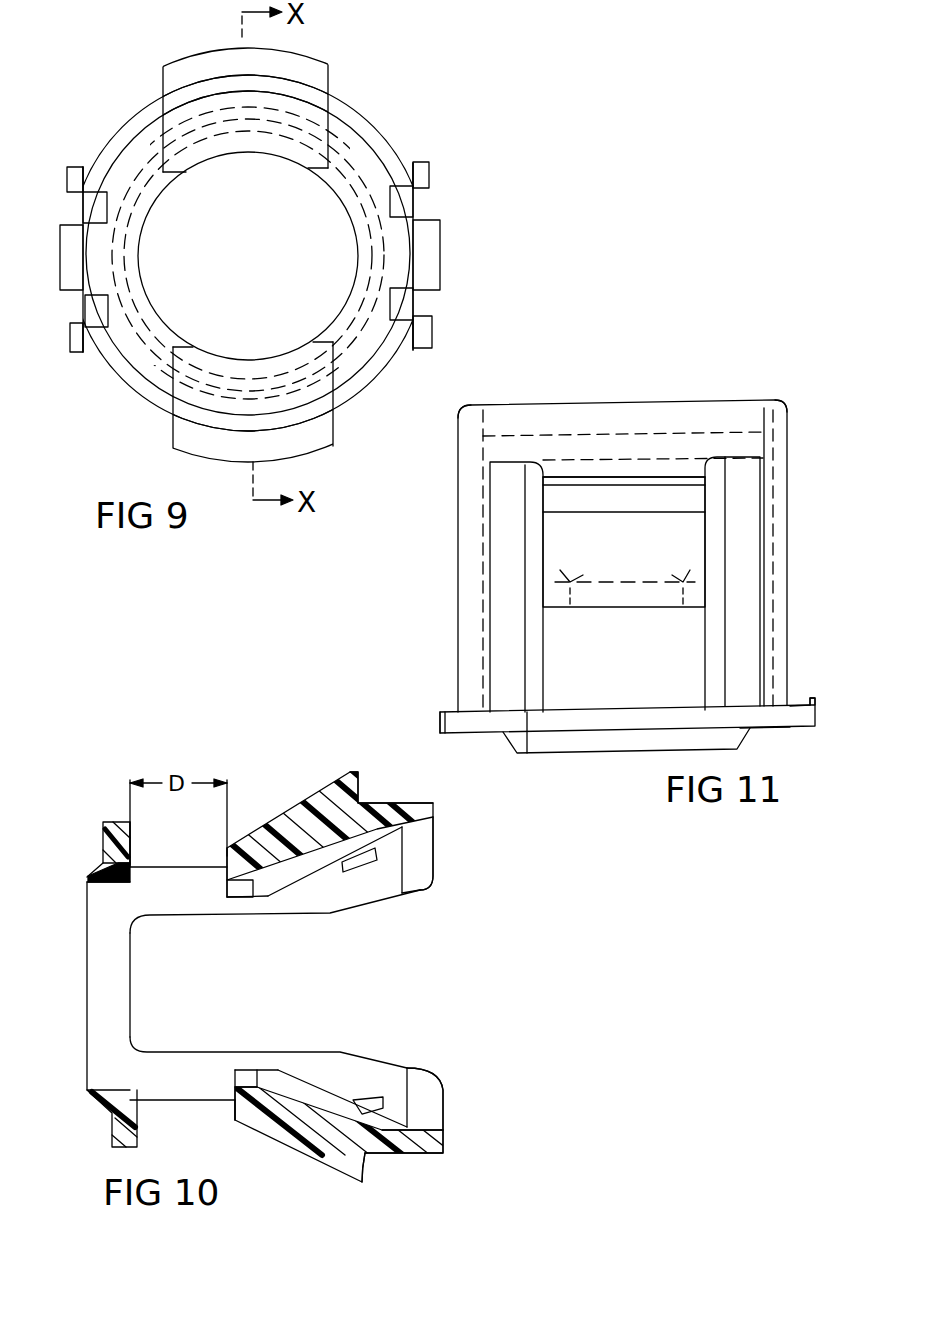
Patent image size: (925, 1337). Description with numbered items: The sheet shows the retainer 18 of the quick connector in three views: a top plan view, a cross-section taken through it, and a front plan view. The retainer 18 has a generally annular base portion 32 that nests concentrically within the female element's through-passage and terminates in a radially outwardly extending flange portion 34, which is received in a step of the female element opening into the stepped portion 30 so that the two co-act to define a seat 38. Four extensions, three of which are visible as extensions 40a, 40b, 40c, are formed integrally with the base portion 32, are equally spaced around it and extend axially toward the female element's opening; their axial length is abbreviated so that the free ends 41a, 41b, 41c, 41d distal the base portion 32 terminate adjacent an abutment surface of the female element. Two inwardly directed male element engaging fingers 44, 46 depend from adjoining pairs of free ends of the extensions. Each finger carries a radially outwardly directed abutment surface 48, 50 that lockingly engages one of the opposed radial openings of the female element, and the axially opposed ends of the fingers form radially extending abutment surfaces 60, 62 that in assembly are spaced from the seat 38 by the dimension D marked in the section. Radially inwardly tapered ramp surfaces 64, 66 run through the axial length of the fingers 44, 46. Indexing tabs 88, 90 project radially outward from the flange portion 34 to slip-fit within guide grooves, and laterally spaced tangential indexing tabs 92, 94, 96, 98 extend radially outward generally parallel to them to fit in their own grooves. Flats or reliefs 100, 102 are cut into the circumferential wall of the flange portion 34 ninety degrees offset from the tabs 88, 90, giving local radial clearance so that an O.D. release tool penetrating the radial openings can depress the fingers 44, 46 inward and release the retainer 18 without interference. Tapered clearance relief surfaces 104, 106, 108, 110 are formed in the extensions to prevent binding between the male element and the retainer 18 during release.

In FIG. 9, the retainer 18 is at (114, 100).
In FIG. 11, the retainer 18 is at (786, 380).
In FIG. 10, the retainer 18 is at (100, 795).
In FIG. 11, the stepped portion 30 is at (457, 705).
In FIG. 11, the base portion 32 is at (765, 725).
In FIG. 10, the base portion 32 is at (103, 903).
In FIG. 10, the flange portion 34 is at (112, 854).
In FIG. 10, the seat 38 is at (137, 1113).
In FIG. 10, the extension 40a is at (327, 903).
In FIG. 11, the extension 40b is at (775, 603).
In FIG. 10, the extension 40b is at (303, 1057).
In FIG. 11, the extension 40c is at (480, 565).
In FIG. 9, the free end 41a is at (420, 165).
In FIG. 10, the free end 41a is at (423, 877).
In FIG. 9, the free end 41b is at (412, 342).
In FIG. 11, the free end 41b is at (772, 400).
In FIG. 10, the free end 41b is at (437, 1095).
In FIG. 9, the free end 41c is at (98, 355).
In FIG. 11, the free end 41c is at (464, 413).
In FIG. 9, the free end 41d is at (94, 152).
In FIG. 9, the male element engaging finger 44 is at (312, 70).
In FIG. 10, the male element engaging finger 44 is at (292, 810).
In FIG. 11, the male element engaging finger 46 is at (625, 560).
In FIG. 10, the male element engaging finger 46 is at (290, 1140).
In FIG. 9, the abutment surface 48 is at (205, 58).
In FIG. 10, the abutment surface 48 is at (357, 782).
In FIG. 9, the abutment surface 50 is at (322, 428).
In FIG. 11, the abutment surface 50 is at (580, 478).
In FIG. 10, the abutment surface 50 is at (367, 1158).
In FIG. 10, the abutment surface 60 is at (227, 862).
In FIG. 10, the abutment surface 62 is at (235, 1118).
In FIG. 9, the ramp surface 64 is at (270, 125).
In FIG. 10, the ramp surface 64 is at (293, 897).
In FIG. 9, the ramp surface 66 is at (205, 372).
In FIG. 10, the ramp surface 66 is at (333, 1087).
In FIG. 9, the indexing tab 88 is at (440, 252).
In FIG. 11, the indexing tab 88 is at (812, 698).
In FIG. 9, the indexing tab 90 is at (62, 256).
In FIG. 11, the indexing tab 90 is at (440, 722).
In FIG. 9, the tangential indexing tab 92 is at (430, 176).
In FIG. 9, the tangential indexing tab 94 is at (66, 167).
In FIG. 9, the tangential indexing tab 96 is at (434, 330).
In FIG. 11, the tangential indexing tab 96 is at (795, 727).
In FIG. 9, the tangential indexing tab 98 is at (70, 345).
In FIG. 11, the tangential indexing tab 98 is at (455, 734).
In FIG. 9, the flat 100 is at (330, 106).
In FIG. 10, the flat 100 is at (117, 822).
In FIG. 9, the flat 102 is at (150, 407).
In FIG. 11, the flat 102 is at (608, 733).
In FIG. 10, the flat 102 is at (125, 1147).
In FIG. 9, the tapered clearance relief surface 104 is at (418, 205).
In FIG. 10, the tapered clearance relief surface 104 is at (383, 903).
In FIG. 9, the tapered clearance relief surface 106 is at (418, 300).
In FIG. 10, the tapered clearance relief surface 106 is at (393, 1060).
In FIG. 9, the tapered clearance relief surface 108 is at (90, 208).
In FIG. 9, the tapered clearance relief surface 110 is at (88, 310).